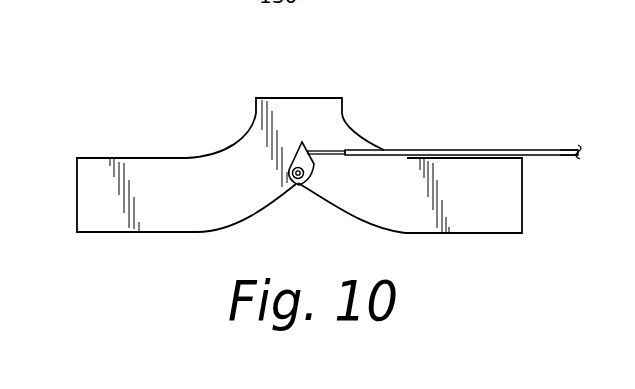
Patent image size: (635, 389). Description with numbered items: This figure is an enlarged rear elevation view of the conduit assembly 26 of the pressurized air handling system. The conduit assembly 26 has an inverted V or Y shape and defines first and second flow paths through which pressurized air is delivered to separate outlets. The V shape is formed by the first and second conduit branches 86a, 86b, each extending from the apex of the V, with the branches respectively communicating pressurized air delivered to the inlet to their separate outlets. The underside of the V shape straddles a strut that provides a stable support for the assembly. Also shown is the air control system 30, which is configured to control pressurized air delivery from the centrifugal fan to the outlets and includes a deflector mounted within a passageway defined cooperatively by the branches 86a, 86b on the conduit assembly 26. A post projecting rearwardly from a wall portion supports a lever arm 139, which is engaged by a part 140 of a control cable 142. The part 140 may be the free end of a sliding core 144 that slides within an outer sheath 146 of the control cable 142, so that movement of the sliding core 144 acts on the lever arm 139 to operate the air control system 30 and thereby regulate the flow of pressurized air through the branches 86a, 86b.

The conduit assembly 26 is at (320, 208).
The air control system 30 is at (333, 185).
The first conduit branch 86a is at (473, 233).
The second conduit branch 86b is at (145, 233).
The lever arm 139 is at (302, 142).
The part of control cable 140 is at (313, 153).
The control cable 142 is at (442, 152).
The sliding core 144 is at (338, 151).
The outer sheath 146 is at (563, 147).